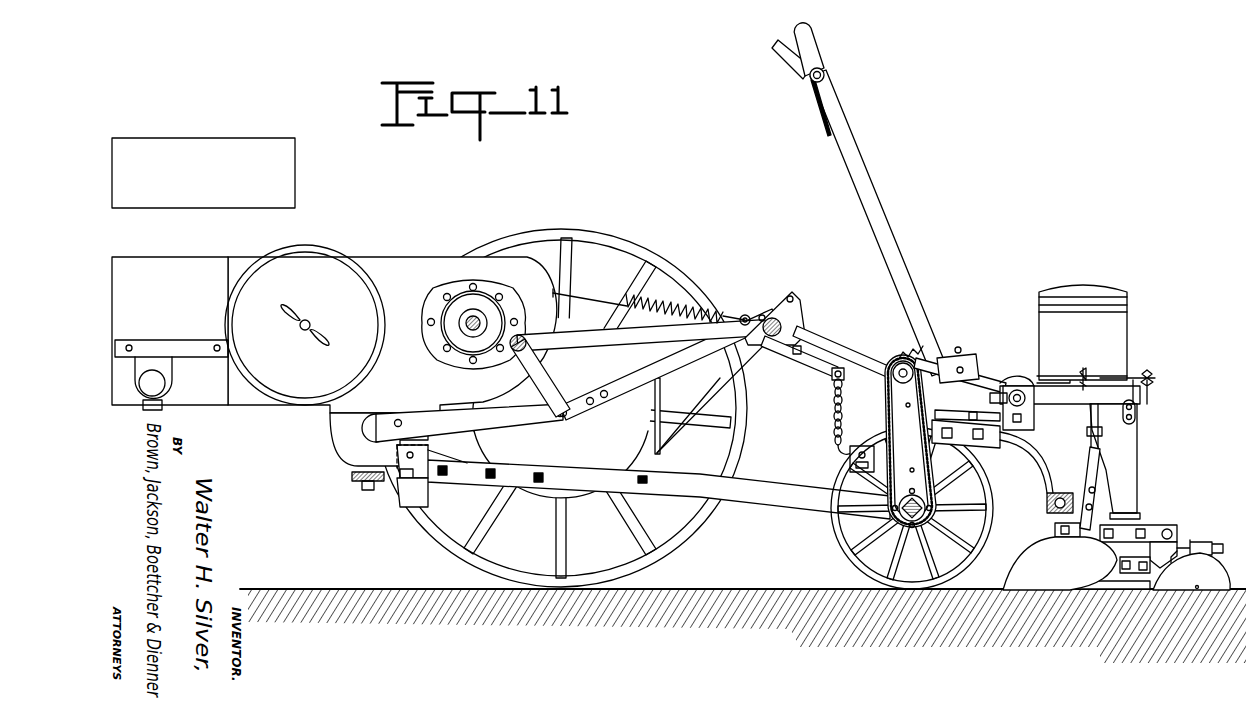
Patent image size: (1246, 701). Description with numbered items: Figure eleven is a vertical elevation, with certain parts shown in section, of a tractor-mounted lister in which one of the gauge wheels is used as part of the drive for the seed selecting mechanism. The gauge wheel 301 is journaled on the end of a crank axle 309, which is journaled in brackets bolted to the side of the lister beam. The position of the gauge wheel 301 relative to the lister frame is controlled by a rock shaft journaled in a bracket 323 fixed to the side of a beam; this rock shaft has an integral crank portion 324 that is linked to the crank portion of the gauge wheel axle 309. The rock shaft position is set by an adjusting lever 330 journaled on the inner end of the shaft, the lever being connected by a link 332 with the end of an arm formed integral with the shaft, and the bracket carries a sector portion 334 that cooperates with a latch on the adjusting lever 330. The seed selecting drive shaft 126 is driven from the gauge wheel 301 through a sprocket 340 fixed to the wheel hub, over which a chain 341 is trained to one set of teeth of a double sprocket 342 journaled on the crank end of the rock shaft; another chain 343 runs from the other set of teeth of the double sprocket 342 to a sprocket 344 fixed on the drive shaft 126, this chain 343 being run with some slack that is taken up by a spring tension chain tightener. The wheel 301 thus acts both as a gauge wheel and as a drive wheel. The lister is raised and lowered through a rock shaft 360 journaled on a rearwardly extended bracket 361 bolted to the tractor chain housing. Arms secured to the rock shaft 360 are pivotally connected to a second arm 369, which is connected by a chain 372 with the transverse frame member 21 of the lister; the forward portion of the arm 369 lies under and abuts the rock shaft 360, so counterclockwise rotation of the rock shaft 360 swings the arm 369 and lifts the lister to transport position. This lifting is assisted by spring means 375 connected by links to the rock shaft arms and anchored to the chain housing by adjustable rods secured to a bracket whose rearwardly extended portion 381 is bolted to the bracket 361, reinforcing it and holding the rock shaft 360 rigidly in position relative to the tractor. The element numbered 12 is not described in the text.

The traction wheel 12 is at (531, 233).
The transverse frame member 21 is at (848, 470).
The drive shaft 126 is at (1030, 380).
The gauge wheel 301 is at (858, 548).
The crank axle 309 is at (808, 505).
The bracket 323 is at (976, 440).
The crank portion 324 is at (966, 373).
The adjusting lever 330 is at (893, 248).
The link 332 is at (961, 348).
The sector portion 334 is at (908, 358).
The sprocket 340 is at (935, 513).
The chain 341 is at (926, 500).
The double sprocket 342 is at (895, 378).
The chain 343 is at (990, 384).
The sprocket 344 is at (1036, 392).
The rock shaft 360 is at (771, 317).
The bracket 361 is at (722, 372).
The arm 369 is at (816, 365).
The chain 372 is at (836, 441).
The spring means 375 is at (702, 304).
The portion 381 is at (593, 297).